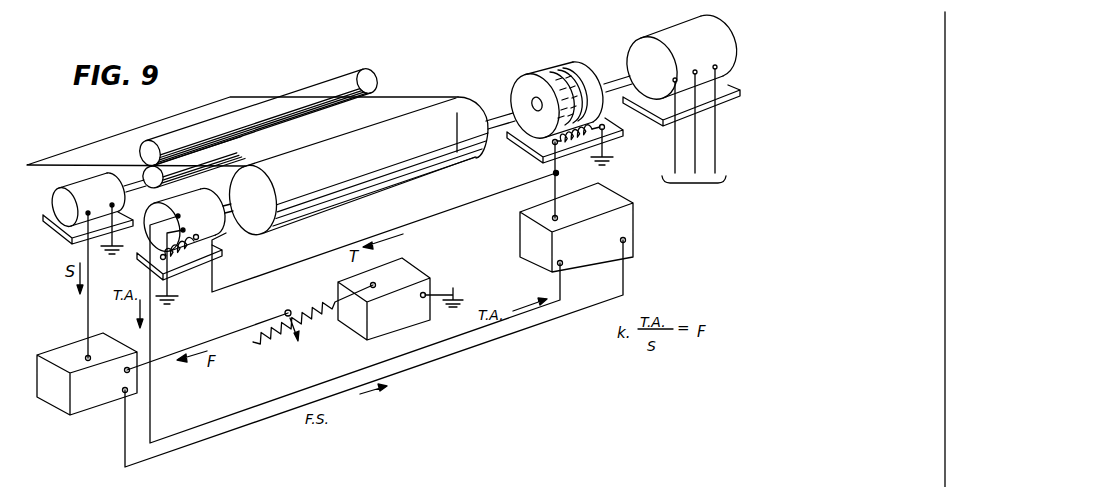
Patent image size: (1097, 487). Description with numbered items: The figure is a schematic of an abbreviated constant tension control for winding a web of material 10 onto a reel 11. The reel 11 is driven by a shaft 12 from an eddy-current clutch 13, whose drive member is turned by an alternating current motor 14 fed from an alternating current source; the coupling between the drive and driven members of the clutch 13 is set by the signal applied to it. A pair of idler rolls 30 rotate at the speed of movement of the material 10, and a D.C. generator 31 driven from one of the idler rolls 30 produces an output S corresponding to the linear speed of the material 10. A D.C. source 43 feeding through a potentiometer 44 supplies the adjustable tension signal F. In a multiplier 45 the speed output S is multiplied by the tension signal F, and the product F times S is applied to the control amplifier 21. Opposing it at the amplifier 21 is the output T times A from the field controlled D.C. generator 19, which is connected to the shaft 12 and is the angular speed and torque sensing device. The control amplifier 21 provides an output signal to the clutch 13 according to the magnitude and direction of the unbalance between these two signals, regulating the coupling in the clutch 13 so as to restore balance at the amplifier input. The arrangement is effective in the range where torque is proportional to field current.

The material 10 is at (363, 112).
The reel 11 is at (467, 114).
The shaft 12 is at (500, 110).
The eddy-current clutch 13 is at (576, 55).
The alternating current motor 14 is at (720, 38).
The tachometer generator 19 is at (220, 243).
The control amplifier 21 is at (632, 240).
The idler rolls 30 is at (140, 157).
The D.C. generator 31 is at (52, 200).
The D.C. source 43 is at (407, 275).
The potentiometer 44 is at (288, 358).
The multiplier 45 is at (62, 361).